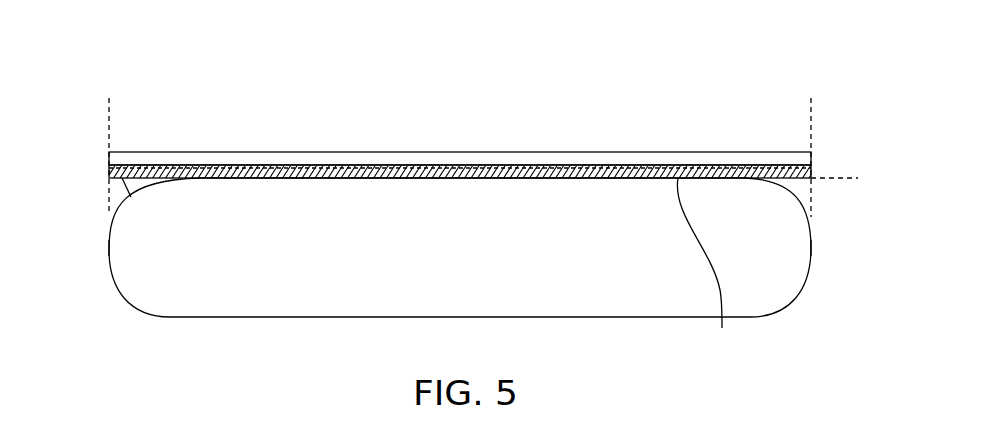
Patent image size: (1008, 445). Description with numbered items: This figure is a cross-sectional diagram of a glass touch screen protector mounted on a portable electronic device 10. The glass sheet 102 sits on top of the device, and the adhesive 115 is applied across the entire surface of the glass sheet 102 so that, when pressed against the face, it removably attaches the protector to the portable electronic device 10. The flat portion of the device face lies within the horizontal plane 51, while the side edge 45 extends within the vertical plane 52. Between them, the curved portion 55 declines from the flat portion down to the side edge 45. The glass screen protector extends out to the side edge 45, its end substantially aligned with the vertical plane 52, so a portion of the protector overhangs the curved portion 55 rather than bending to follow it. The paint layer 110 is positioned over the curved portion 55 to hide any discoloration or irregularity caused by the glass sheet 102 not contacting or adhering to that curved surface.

The portable electronic device 10 is at (140, 317).
The glass sheet 102 is at (270, 157).
The paint layer 110 is at (109, 168).
The vertical plane 52 is at (109, 100).
The horizontal plane 51 is at (830, 181).
The curved portion 55 is at (109, 211).
The side edge 45 is at (109, 248).
The adhesive 115 is at (710, 267).